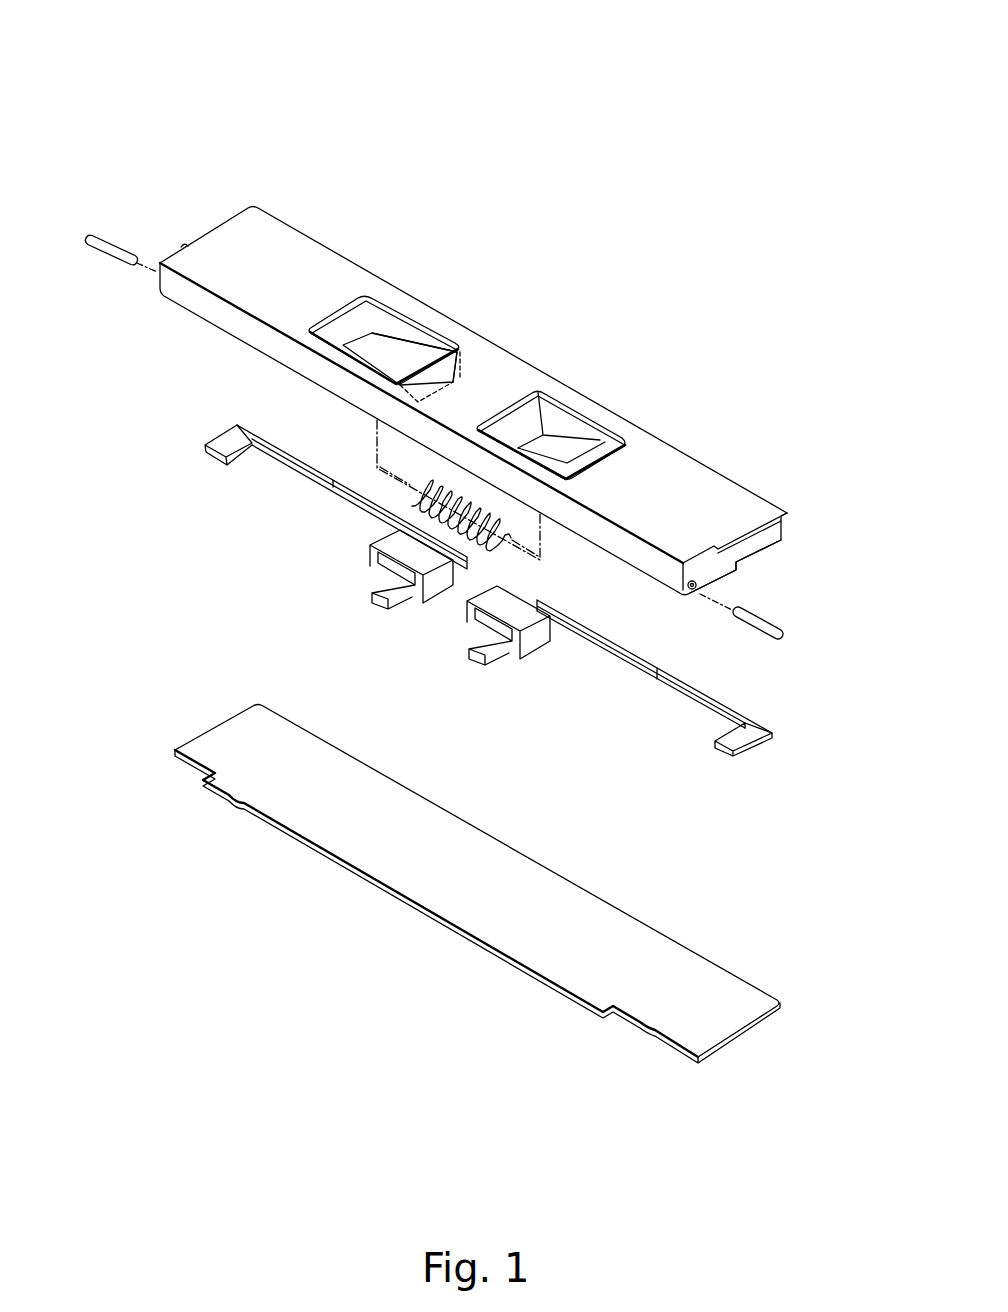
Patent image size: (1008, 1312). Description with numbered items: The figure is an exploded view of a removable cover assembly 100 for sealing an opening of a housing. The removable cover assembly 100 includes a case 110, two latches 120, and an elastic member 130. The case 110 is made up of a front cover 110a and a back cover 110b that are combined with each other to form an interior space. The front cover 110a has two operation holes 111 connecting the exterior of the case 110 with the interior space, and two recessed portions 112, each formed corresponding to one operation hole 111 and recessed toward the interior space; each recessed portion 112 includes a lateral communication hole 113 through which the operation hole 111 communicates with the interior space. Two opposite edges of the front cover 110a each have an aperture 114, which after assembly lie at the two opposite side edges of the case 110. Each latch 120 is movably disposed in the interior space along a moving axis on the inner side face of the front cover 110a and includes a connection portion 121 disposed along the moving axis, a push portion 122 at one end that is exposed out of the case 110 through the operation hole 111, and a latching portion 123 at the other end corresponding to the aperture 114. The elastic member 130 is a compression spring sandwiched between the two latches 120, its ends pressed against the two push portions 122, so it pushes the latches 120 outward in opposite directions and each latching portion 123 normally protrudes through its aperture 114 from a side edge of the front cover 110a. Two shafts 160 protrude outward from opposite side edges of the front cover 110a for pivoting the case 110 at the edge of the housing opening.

The removable cover assembly 100 is at (218, 93).
The case 110 is at (100, 447).
The front cover 110a is at (259, 327).
The back cover 110b is at (277, 732).
The operation hole 111 is at (408, 313).
The recessed portion 112 is at (398, 366).
The communication hole 113 is at (458, 368).
The aperture 114 is at (757, 550).
The latch 120 is at (318, 502).
The connection portion 121 is at (345, 503).
The push portion 122 is at (435, 578).
The latching portion 123 is at (235, 438).
The elastic member 130 is at (512, 557).
The shaft 160 is at (106, 245).